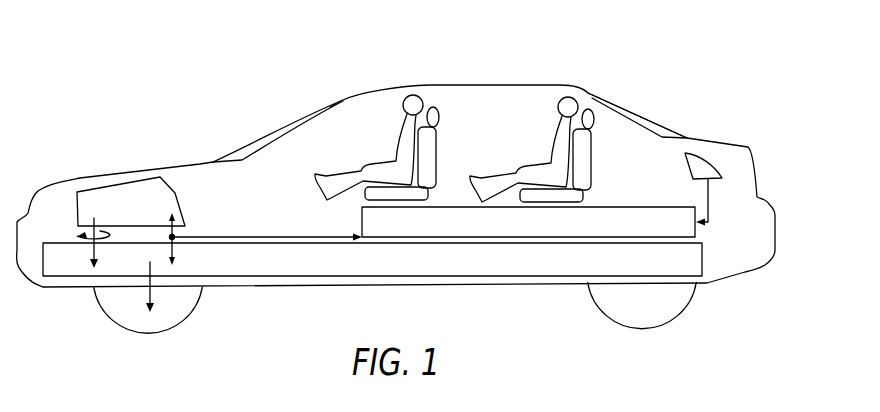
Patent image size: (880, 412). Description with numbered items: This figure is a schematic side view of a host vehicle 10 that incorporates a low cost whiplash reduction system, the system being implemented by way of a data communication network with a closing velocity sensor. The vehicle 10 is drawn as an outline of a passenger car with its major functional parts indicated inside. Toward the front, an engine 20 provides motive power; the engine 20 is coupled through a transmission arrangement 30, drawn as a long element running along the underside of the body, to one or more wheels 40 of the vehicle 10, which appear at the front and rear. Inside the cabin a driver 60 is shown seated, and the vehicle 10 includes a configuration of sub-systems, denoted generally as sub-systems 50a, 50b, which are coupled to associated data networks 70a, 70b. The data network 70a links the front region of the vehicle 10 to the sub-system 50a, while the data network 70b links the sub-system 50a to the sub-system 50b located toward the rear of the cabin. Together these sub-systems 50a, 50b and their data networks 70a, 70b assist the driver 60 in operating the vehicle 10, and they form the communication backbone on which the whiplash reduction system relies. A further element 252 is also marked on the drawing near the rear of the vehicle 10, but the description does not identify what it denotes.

The host vehicle 10 is at (190, 48).
The engine 20 is at (137, 217).
The transmission arrangement 30 is at (407, 270).
The wheels 40 is at (182, 304).
The sub-system 50a is at (548, 234).
The sub-system 50b is at (705, 165).
The driver 60 is at (410, 95).
The data network 70a is at (278, 233).
The data network 70b is at (711, 211).
The rear window / pillar 252 is at (635, 113).